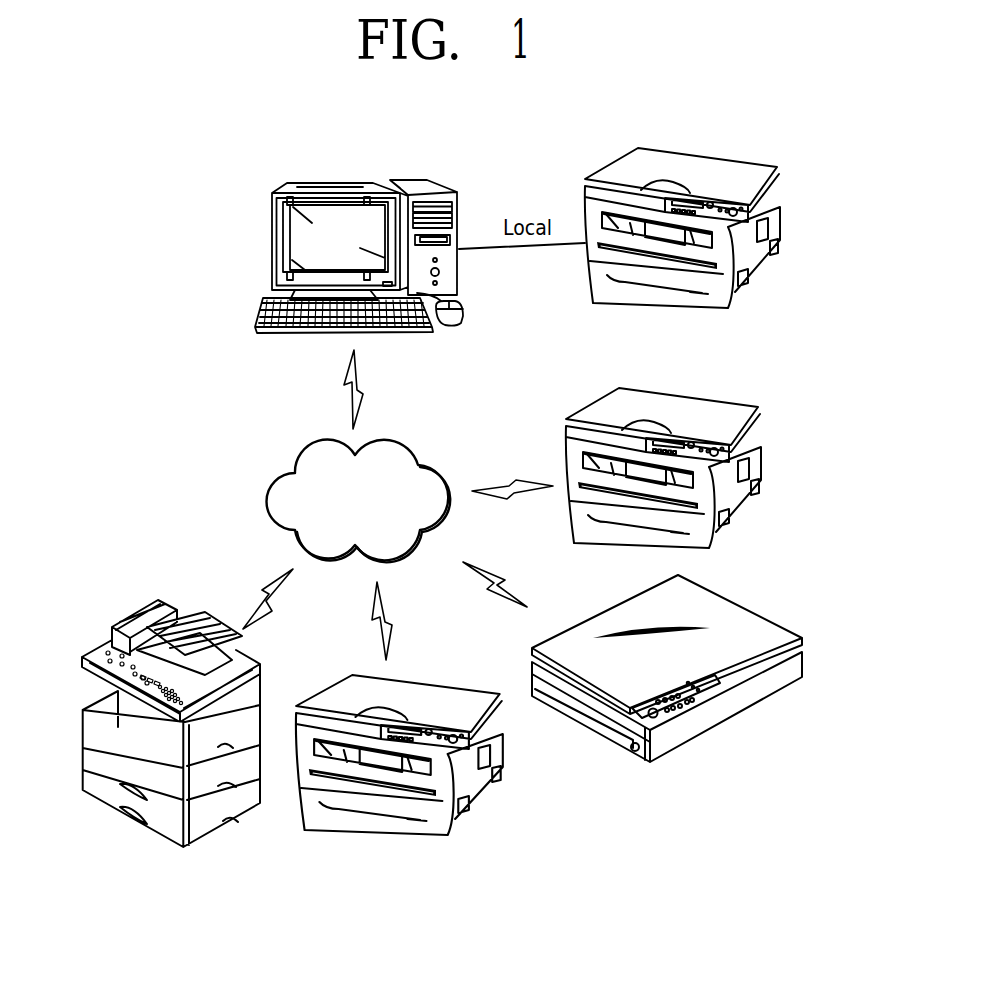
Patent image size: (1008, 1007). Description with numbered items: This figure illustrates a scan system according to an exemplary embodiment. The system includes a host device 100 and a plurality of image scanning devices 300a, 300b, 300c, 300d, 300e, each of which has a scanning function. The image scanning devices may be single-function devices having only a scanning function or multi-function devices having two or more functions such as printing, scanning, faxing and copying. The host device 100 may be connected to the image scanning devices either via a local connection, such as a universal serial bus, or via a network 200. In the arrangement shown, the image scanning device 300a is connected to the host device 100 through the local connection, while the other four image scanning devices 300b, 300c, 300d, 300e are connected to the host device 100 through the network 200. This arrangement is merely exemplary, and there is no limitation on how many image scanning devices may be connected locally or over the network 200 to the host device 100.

The host device 100 is at (337, 180).
The network 200 is at (302, 452).
The image scanning device 300a is at (779, 166).
The image scanning device 300b is at (126, 615).
The image scanning device 300c is at (473, 800).
The image scanning device 300d is at (760, 610).
The image scanning device 300e is at (759, 406).